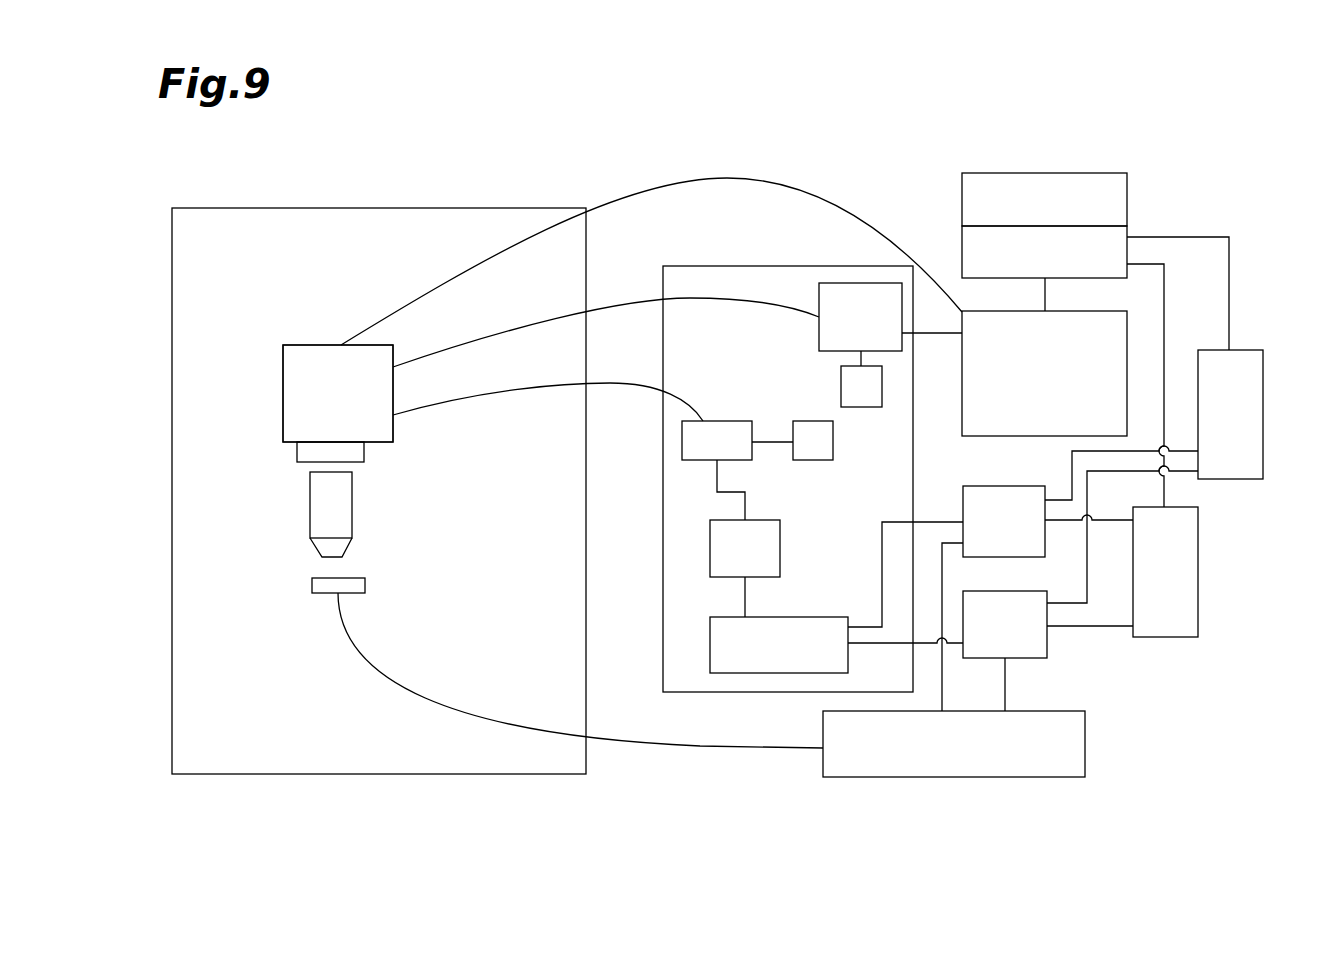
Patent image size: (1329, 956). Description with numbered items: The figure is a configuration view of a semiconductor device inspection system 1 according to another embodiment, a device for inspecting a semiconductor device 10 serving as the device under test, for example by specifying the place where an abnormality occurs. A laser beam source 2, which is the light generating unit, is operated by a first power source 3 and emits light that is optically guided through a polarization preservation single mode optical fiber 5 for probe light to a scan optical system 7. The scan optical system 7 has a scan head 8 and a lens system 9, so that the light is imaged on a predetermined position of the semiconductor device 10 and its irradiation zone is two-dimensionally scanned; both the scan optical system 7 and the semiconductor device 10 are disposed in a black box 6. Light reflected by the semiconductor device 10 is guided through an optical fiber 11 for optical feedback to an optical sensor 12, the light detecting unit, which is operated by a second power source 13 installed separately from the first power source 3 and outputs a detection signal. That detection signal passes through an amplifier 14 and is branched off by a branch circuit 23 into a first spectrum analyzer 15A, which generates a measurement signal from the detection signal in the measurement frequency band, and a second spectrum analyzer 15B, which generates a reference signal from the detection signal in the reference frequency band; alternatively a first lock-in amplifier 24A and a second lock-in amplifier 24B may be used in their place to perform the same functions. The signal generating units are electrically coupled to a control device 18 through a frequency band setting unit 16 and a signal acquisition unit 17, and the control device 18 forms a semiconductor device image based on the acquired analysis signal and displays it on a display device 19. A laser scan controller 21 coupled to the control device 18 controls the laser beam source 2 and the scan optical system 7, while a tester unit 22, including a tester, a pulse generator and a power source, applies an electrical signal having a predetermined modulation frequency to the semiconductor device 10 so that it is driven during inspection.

The semiconductor device inspection system 1 is at (1143, 127).
The laser beam source 2 is at (843, 283).
The first power source 3 is at (862, 407).
The polarization preservation single mode optical fiber 5 is at (630, 302).
The black box 6 is at (374, 207).
The scan optical system 7 is at (303, 345).
The scan head 8 is at (283, 392).
The lens system 9 is at (310, 506).
The semiconductor device 10 is at (312, 588).
The optical fiber for optical feedback 11 is at (628, 390).
The optical sensor 12 is at (728, 421).
The second power source 13 is at (815, 460).
The amplifier 14 is at (710, 548).
The first spectrum analyzer 15A is at (983, 499).
The second spectrum analyzer 15B is at (1079, 634).
The frequency band setting unit 16 is at (1198, 580).
The signal acquisition unit 17 is at (1263, 413).
The control device 18 is at (962, 255).
The display device 19 is at (1043, 173).
The laser scan controller 21 is at (962, 362).
The tester unit 22 is at (955, 777).
The branch circuit 23 is at (710, 646).
The first lock-in amplifier 24A is at (980, 486).
The second lock-in amplifier 24B is at (1047, 645).